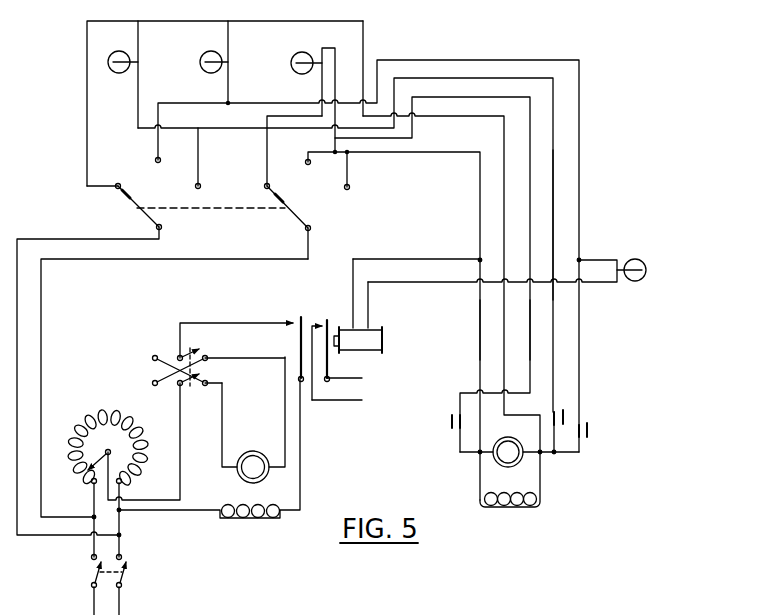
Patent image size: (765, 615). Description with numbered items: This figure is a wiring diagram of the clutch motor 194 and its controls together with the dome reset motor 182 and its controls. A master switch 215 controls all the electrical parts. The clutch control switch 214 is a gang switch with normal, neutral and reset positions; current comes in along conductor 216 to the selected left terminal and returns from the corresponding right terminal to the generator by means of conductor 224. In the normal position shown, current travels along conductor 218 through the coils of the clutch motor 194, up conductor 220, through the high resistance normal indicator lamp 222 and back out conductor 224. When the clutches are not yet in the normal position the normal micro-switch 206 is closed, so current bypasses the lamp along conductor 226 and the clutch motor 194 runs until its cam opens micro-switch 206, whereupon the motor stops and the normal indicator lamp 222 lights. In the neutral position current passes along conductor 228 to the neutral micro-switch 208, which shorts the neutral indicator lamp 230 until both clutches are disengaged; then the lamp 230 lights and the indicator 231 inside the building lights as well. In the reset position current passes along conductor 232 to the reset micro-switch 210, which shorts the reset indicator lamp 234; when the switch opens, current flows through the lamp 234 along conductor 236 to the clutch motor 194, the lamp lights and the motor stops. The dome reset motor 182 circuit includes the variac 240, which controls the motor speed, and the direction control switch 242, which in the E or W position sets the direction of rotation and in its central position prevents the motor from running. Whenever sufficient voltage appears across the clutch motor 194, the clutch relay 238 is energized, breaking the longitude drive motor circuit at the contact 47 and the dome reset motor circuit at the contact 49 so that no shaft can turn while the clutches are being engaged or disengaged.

The conductor 218 is at (86, 56).
The reset indicator lamp 234 is at (117, 53).
The neutral indicator lamp 230 is at (205, 53).
The normal indicator lamp 222 is at (295, 58).
The conductor 236 is at (364, 39).
The conductor 228 is at (190, 102).
The conductor 216 is at (58, 239).
The clutch control switch 214 is at (215, 232).
The conductor 224 is at (86, 261).
The direction control switch 242 is at (166, 345).
The variac 240 is at (92, 414).
The master switch 215 is at (88, 574).
The dome reset motor 182 is at (278, 488).
The contact 49 is at (295, 322).
The contact 47 is at (324, 316).
The clutch relay 238 is at (363, 347).
The conductor 232 is at (555, 212).
The indicator 231 is at (642, 262).
The conductor 226 is at (530, 323).
The conductor 220 is at (480, 343).
The normal micro-switch 206 is at (452, 430).
The reset micro-switch 210 is at (566, 410).
The neutral micro-switch 208 is at (587, 437).
The clutch motor 194 is at (529, 481).